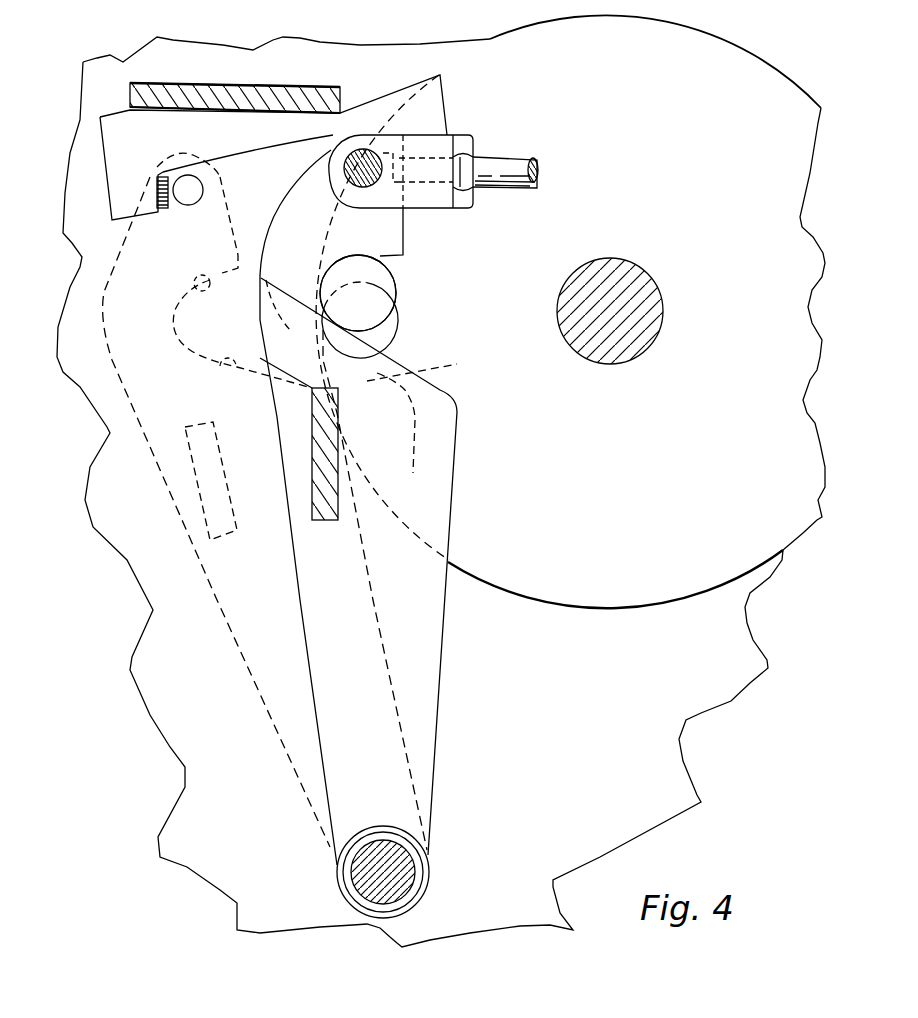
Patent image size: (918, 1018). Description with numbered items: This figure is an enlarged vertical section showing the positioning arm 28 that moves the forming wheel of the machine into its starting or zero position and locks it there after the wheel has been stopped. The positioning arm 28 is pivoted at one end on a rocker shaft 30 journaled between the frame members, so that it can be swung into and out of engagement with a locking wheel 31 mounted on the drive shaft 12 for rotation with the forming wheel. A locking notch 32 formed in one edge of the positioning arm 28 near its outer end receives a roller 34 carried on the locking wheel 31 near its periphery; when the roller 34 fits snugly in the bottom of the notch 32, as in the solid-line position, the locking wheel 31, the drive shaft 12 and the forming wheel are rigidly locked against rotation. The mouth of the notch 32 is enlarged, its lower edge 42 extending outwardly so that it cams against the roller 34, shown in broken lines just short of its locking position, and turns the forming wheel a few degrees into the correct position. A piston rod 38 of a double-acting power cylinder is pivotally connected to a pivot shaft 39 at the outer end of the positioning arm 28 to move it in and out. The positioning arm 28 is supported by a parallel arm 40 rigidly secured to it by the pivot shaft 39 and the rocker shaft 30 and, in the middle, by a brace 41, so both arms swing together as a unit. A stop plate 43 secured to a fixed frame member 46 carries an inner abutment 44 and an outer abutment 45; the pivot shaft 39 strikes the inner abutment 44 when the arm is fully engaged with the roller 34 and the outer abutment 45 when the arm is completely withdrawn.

The drive shaft 12 is at (640, 288).
The positioning arm 28 is at (207, 560).
The rocker shaft 30 is at (380, 890).
The locking wheel 31 is at (612, 593).
The locking notch 32 is at (210, 280).
The roller 34 is at (397, 293).
The piston rod 38 is at (540, 167).
The pivot shaft 39 is at (193, 204).
The parallel arm 40 is at (412, 212).
The brace 41 is at (333, 520).
The lower edge 42 is at (235, 368).
The stop plate 43 is at (100, 147).
The inner abutment 44 is at (403, 157).
The outer abutment 45 is at (157, 193).
The fixed frame member 46 is at (200, 92).